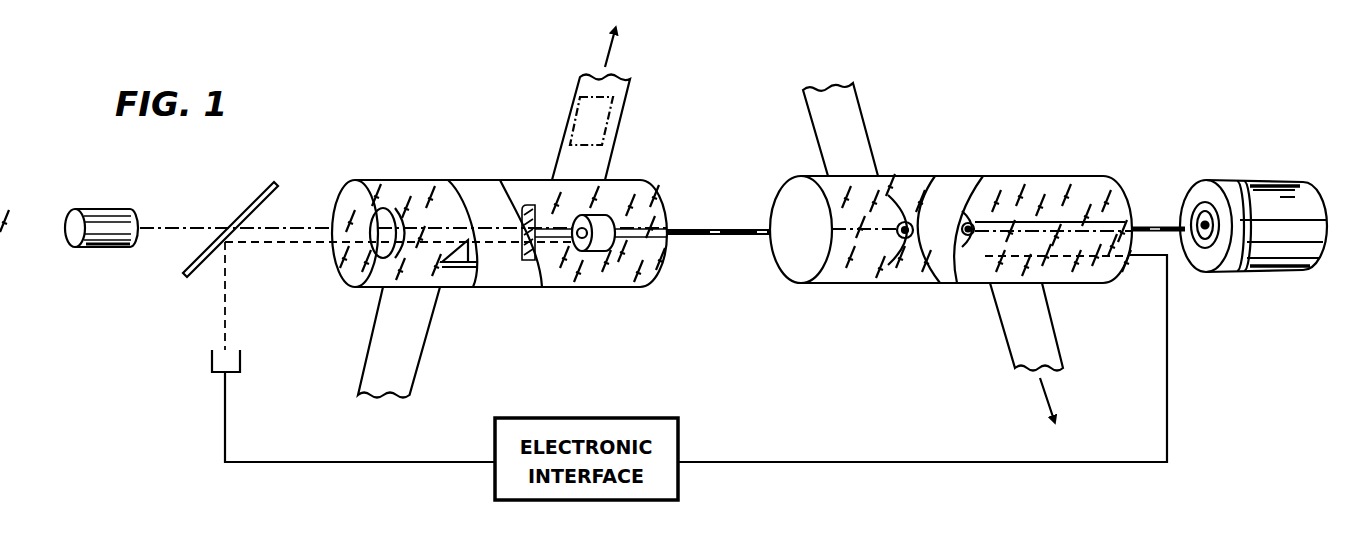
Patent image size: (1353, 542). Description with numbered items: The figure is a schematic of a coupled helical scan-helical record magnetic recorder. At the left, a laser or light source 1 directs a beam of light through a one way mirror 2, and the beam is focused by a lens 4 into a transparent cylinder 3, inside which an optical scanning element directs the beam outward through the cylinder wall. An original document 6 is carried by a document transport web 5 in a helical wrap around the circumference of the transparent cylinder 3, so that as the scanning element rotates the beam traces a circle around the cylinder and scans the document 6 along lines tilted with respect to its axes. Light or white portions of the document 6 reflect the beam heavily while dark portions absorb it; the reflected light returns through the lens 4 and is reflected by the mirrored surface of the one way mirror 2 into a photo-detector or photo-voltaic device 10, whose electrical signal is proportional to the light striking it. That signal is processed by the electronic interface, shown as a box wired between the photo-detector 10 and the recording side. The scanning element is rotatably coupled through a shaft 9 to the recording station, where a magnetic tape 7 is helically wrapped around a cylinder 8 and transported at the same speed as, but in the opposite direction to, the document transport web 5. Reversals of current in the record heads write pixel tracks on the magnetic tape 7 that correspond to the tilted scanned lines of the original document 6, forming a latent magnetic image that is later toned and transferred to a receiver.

The laser or light source 1 is at (100, 208).
The one way mirror 2 is at (247, 206).
The transparent cylinder 3 is at (403, 179).
The lens 4 is at (366, 219).
The document transport web 5 is at (562, 127).
The original document 6 is at (598, 131).
The magnetic tape 7 is at (858, 128).
The cylinder 8 is at (1082, 176).
The shaft 9 is at (719, 228).
The photo-detector or photo-voltaic device 10 is at (243, 358).